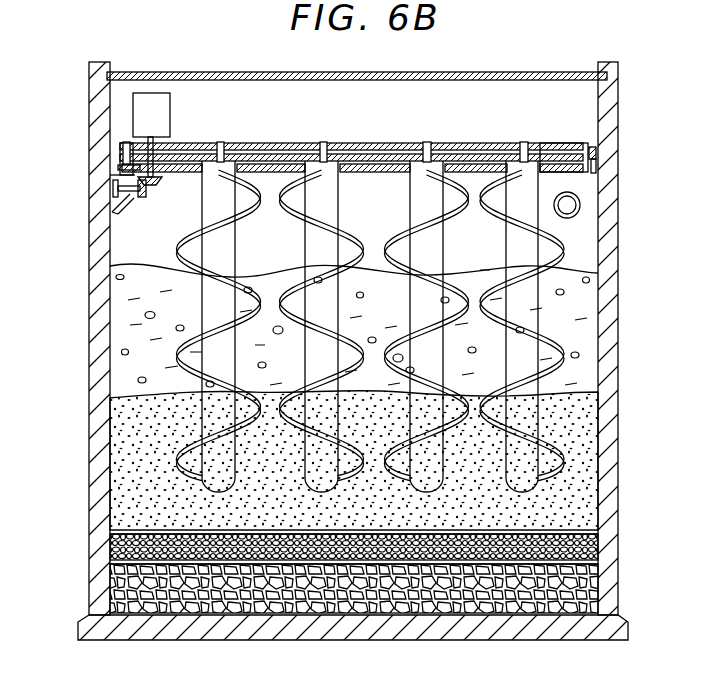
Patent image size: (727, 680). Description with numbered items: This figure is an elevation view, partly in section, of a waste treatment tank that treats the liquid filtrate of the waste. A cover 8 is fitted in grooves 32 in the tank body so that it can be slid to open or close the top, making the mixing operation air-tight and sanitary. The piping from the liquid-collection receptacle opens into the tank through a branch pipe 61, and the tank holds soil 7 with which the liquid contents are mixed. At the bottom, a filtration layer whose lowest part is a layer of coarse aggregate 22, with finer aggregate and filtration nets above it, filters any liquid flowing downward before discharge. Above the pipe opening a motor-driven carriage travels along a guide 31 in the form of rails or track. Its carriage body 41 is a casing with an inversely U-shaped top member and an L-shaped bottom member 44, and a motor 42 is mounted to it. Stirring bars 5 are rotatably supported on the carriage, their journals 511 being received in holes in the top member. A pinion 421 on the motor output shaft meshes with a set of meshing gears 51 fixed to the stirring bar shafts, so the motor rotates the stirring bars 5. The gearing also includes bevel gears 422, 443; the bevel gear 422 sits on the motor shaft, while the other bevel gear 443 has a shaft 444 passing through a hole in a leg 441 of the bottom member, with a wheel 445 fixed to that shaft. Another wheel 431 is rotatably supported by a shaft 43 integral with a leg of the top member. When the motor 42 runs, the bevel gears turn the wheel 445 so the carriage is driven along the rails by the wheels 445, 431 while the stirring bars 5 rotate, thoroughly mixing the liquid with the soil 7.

The grooves 32 is at (106, 70).
The right side wall 31 is at (612, 180).
The cover plate 8 is at (577, 72).
The upper frame bar 41 is at (278, 145).
The meshing gears 51 is at (344, 145).
The journals 511 is at (225, 145).
The bracket 44 is at (572, 145).
The fastening screw 43 is at (596, 152).
The wheel 431 is at (598, 174).
The branch pipe 61 is at (580, 206).
The motor 42 is at (150, 100).
The bevel gear 422 is at (177, 155).
The pinion 421 is at (127, 145).
The leg 441 is at (120, 168).
The wheel 445 is at (112, 178).
The shaft 444 is at (113, 190).
The bevel gear 443 is at (110, 226).
The water 5 is at (110, 264).
The sand layer 7 is at (582, 466).
The gravel drainage layer 22 is at (125, 607).